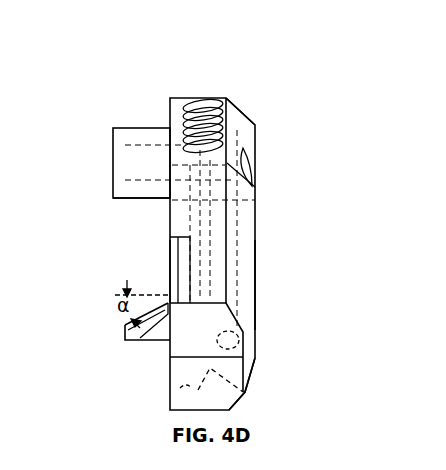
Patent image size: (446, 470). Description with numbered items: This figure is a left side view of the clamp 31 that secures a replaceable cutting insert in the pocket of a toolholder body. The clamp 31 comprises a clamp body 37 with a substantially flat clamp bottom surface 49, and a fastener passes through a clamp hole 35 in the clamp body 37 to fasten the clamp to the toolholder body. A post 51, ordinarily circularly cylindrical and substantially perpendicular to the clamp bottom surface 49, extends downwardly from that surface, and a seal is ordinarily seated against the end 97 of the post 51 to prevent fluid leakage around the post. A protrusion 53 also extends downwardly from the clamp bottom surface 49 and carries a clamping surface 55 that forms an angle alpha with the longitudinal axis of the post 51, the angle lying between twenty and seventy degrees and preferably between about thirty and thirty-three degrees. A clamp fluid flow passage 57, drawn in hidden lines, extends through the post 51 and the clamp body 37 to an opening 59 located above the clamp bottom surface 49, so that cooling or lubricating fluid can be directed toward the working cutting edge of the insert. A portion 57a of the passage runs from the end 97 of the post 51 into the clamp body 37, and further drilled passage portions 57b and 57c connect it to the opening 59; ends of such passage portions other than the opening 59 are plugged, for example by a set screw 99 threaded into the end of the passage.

The clamp 31 is at (153, 70).
The set screw 99 is at (202, 113).
The clamp body 37 is at (247, 125).
The clamp hole 35 is at (248, 160).
The portion of the clamp fluid flow passage 57a is at (140, 158).
The post 51 is at (118, 158).
The end of the post 97 is at (112, 195).
The clamp fluid flow passage 57 is at (212, 221).
The clamp bottom surface 49 is at (170, 267).
The passage portion 57b is at (255, 282).
The clamping surface 55 is at (122, 322).
The protrusion 53 is at (152, 342).
The passage portion 57c is at (245, 392).
The opening 59 is at (198, 390).